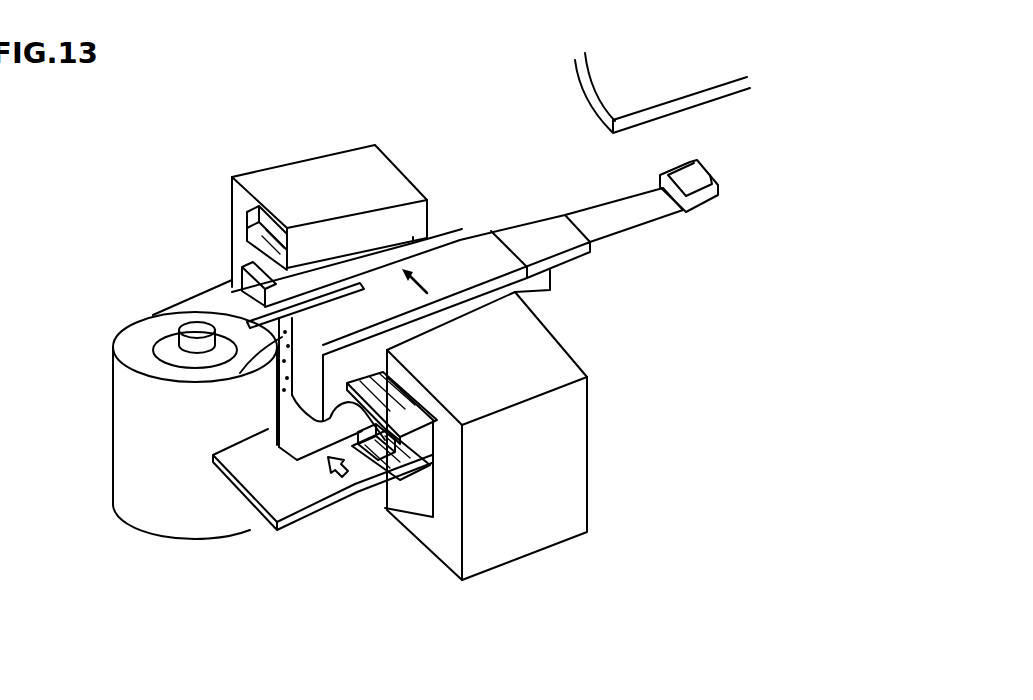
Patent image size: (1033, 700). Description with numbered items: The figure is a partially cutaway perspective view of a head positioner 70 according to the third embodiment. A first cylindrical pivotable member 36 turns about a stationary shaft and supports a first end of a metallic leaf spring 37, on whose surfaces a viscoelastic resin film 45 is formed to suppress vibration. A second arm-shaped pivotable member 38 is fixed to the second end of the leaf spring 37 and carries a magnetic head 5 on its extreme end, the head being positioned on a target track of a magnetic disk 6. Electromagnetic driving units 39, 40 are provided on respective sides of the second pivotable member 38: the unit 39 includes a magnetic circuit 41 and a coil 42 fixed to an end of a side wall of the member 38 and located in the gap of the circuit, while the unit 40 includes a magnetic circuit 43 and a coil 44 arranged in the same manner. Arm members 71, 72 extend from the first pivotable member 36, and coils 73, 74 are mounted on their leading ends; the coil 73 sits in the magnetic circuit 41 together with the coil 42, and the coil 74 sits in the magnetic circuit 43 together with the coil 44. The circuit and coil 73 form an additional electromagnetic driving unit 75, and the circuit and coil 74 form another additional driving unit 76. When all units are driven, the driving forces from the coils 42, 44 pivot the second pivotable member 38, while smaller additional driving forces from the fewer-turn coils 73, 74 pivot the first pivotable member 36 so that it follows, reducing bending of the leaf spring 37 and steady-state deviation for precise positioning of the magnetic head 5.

The head positioner 70 is at (487, 28).
The first cylindrical pivotable member 36 is at (122, 460).
The leaf spring 37 is at (240, 373).
The second arm-shaped pivotable member 38 is at (480, 252).
The electromagnetic driving unit 39 is at (640, 312).
The electromagnetic driving unit 40 is at (433, 38).
The magnetic circuit 41 is at (562, 450).
The coil 42 is at (410, 416).
The magnetic circuit 43 is at (383, 177).
The coil 44 is at (264, 212).
The viscoelastic resin film 45 is at (293, 342).
The arm member 71 is at (293, 500).
The arm member 72 is at (190, 303).
The coil 73 is at (393, 447).
The coil 74 is at (240, 252).
The additional electromagnetic driving unit 75 is at (512, 626).
The additional electromagnetic driving unit 76 is at (150, 150).
The magnetic head 5 is at (699, 217).
The magnetic disk 6 is at (631, 105).